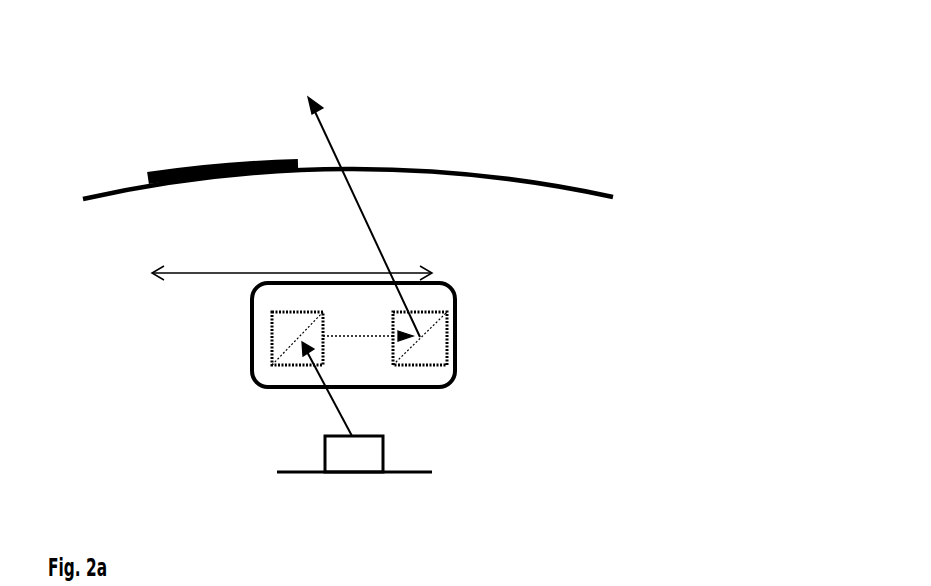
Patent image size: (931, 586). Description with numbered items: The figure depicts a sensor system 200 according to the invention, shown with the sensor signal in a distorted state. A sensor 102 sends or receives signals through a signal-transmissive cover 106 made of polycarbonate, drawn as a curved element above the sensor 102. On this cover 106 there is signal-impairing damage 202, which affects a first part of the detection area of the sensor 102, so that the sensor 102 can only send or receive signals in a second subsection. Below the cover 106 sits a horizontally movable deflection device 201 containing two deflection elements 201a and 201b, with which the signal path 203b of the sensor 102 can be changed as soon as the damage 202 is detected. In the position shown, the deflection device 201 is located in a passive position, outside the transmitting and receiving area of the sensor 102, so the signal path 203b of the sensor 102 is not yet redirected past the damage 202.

The sensor system 200 is at (378, 153).
The signal-transmissive cover 106 is at (545, 178).
The damage 202 is at (257, 177).
The deflection device 201 is at (285, 387).
The first deflection element 201a is at (295, 325).
The second deflection element 201b is at (433, 327).
The signal path 203b is at (367, 218).
The sensor 102 is at (398, 459).